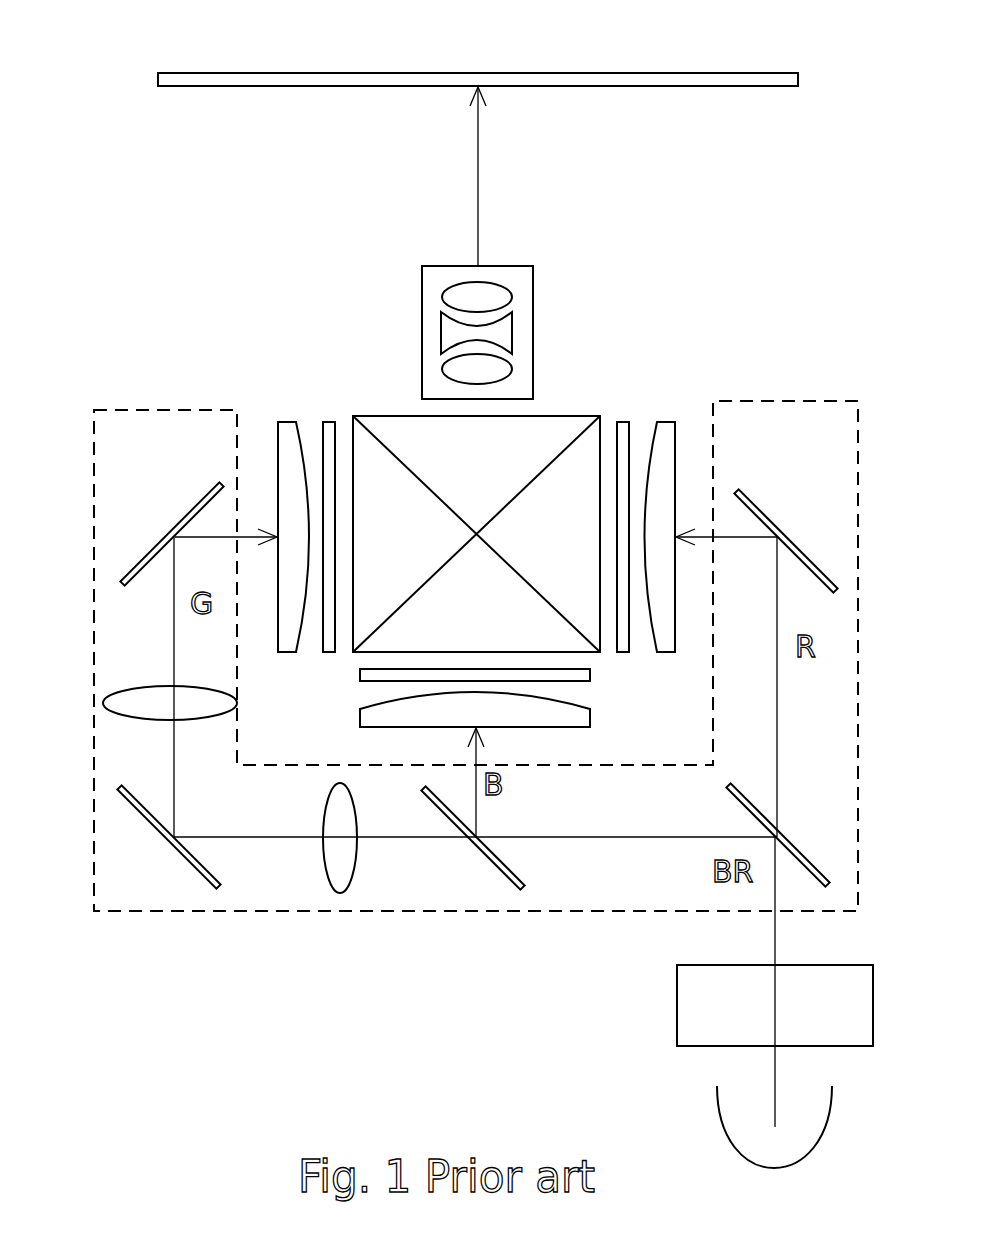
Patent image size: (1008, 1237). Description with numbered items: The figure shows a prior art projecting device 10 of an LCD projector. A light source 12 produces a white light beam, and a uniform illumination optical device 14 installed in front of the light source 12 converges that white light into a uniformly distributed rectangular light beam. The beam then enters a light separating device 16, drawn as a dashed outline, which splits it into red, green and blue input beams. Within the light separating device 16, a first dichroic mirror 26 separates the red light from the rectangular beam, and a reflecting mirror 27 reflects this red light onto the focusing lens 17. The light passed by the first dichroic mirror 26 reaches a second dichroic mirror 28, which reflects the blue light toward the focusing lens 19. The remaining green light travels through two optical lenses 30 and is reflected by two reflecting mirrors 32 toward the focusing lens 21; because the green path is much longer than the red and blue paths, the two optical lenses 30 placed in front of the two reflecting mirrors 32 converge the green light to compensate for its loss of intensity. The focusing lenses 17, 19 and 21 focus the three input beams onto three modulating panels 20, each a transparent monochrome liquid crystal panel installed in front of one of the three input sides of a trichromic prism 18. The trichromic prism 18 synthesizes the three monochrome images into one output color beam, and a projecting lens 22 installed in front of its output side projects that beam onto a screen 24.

The projecting device 10 is at (766, 302).
The light source 12 is at (717, 1120).
The uniform illumination optical device 14 is at (677, 1010).
The light separating device 16 is at (147, 398).
The focusing lens 17 is at (680, 422).
The trichromic prism 18 is at (403, 416).
The focusing lens 19 is at (590, 717).
The modulating panel 20 is at (330, 422).
The focusing lens 21 is at (287, 422).
The projecting lens 22 is at (533, 312).
The screen 24 is at (660, 73).
The first dichroic mirror 26 is at (805, 853).
The reflecting mirror 27 is at (810, 555).
The second dichroic mirror 28 is at (491, 863).
The optical lens 30 is at (125, 688).
The reflecting mirror 32 is at (138, 558).